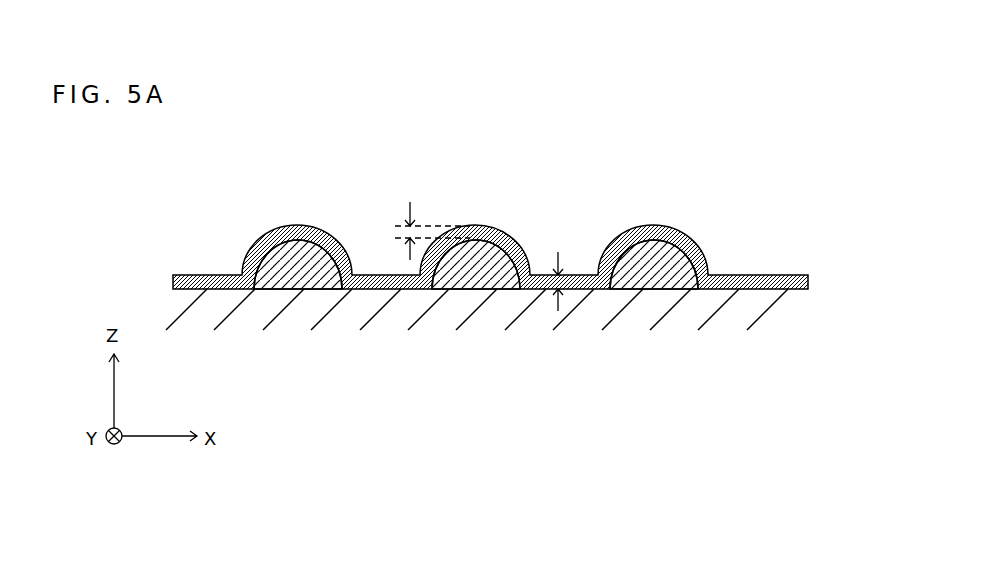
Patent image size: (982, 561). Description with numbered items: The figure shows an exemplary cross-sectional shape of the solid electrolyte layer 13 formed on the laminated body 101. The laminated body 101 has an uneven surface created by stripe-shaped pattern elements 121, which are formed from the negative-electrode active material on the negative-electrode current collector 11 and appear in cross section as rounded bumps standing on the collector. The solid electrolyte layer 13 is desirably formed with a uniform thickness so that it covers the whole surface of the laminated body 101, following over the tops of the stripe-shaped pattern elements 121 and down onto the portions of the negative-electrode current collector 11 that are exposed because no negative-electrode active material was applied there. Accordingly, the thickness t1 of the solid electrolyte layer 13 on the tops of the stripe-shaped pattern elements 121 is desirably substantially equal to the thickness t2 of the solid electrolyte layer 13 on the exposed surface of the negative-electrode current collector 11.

The laminated body 101 is at (725, 167).
The negative-electrode current collector 11 is at (747, 312).
The solid electrolyte layer 13 is at (216, 275).
The stripe-shaped pattern element 121 is at (294, 258).
The thickness of the solid electrolyte layer on tops of the stripe-shaped pattern el t1 is at (418, 231).
The thickness of the solid electrolyte layer on the exposed current collector surfac t2 is at (559, 272).